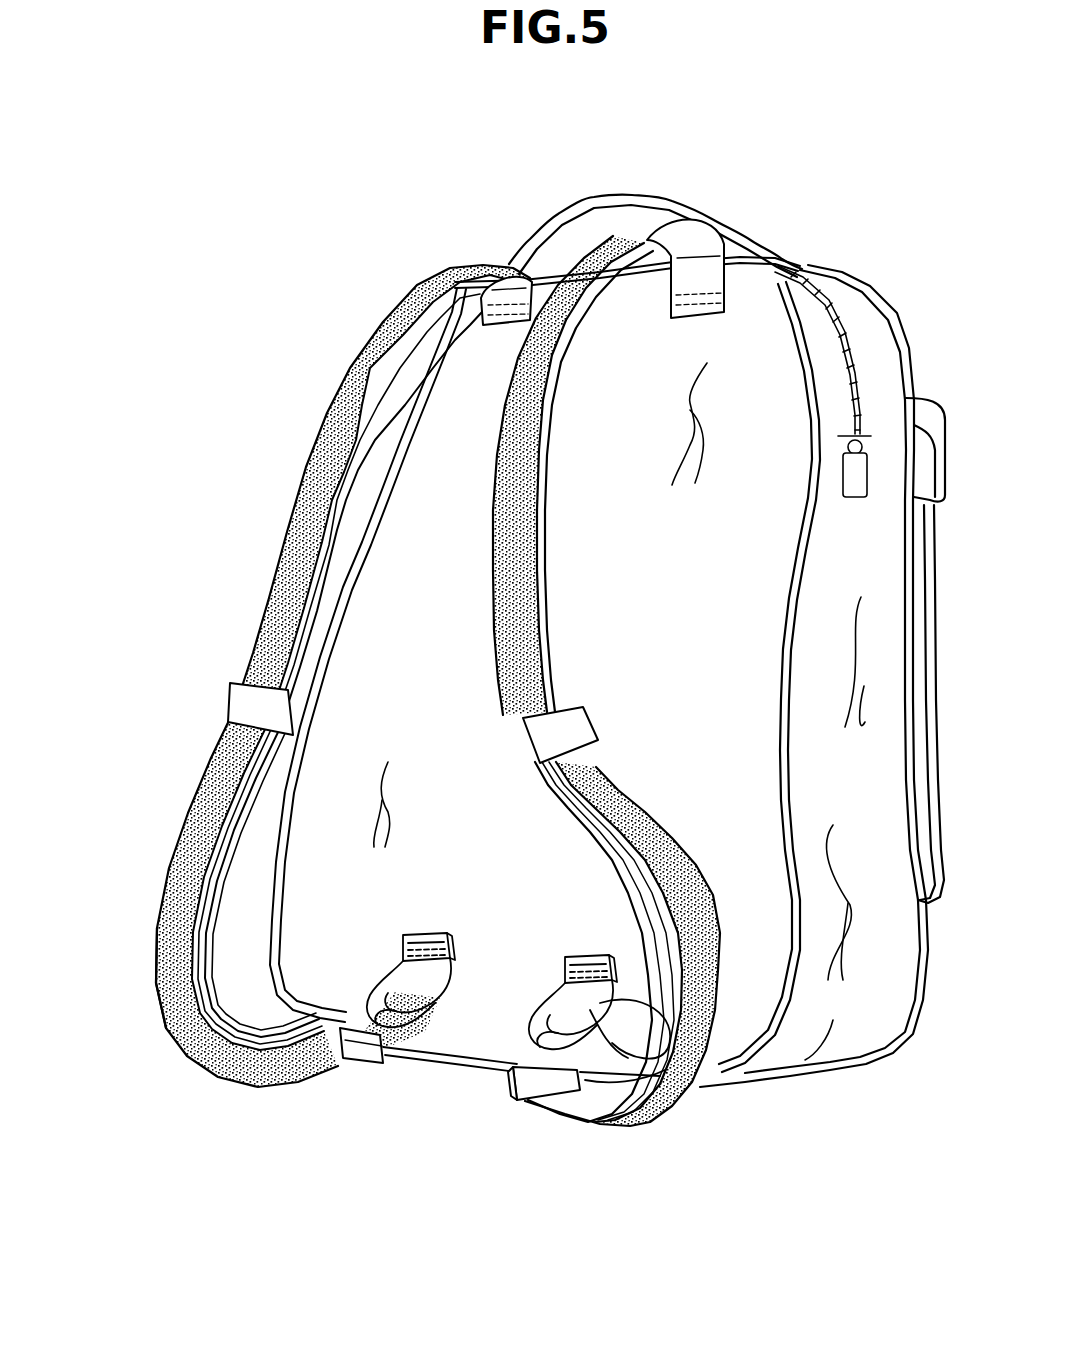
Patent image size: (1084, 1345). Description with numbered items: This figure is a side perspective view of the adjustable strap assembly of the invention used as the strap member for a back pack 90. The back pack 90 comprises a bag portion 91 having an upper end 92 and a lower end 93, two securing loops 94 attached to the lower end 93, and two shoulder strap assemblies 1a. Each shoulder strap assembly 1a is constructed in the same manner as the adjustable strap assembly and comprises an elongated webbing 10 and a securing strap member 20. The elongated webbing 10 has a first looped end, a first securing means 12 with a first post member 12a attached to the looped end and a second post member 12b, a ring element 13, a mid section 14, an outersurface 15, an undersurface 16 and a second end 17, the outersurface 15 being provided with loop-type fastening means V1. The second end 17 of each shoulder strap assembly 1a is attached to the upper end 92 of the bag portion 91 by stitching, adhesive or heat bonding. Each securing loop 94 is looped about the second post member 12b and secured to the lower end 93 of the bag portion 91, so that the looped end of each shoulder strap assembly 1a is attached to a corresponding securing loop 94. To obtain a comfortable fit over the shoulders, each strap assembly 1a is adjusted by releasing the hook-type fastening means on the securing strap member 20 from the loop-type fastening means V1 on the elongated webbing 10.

The back pack 90 is at (481, 205).
The bag portion 91 is at (873, 340).
The upper end 92 is at (650, 280).
The lower end 93 is at (467, 1043).
The securing loops 94 is at (570, 983).
The undersurface 16 is at (643, 287).
The second end 17 is at (723, 300).
The shoulder strap assembly 1a is at (510, 420).
The elongated webbing 10 is at (253, 594).
The outersurface 15 is at (300, 497).
The mid section 14 is at (220, 913).
The securing strap member 20 is at (220, 703).
The ring element 13 is at (377, 1057).
The first securing means 12 is at (630, 1090).
The first post member 12a is at (603, 1080).
The second post member 12b is at (600, 1035).
The loop-type fastening means V1 is at (162, 987).